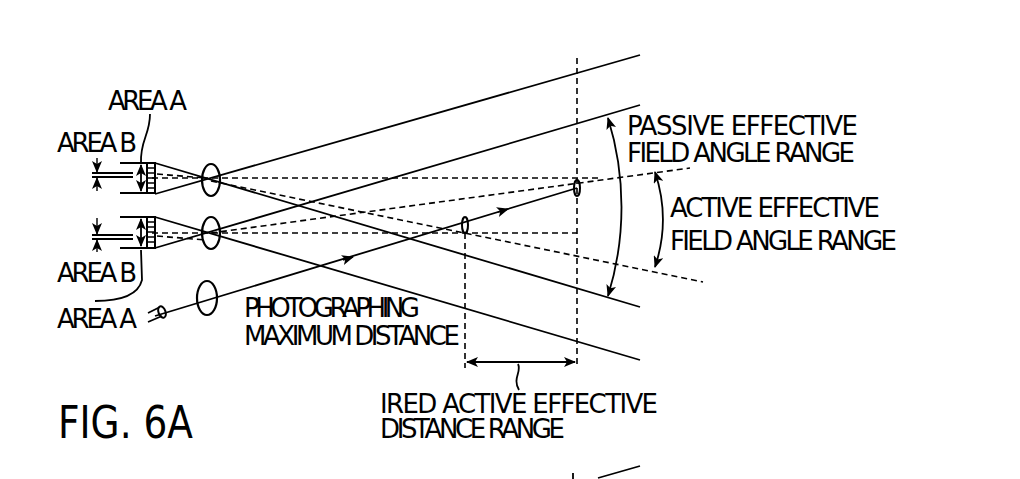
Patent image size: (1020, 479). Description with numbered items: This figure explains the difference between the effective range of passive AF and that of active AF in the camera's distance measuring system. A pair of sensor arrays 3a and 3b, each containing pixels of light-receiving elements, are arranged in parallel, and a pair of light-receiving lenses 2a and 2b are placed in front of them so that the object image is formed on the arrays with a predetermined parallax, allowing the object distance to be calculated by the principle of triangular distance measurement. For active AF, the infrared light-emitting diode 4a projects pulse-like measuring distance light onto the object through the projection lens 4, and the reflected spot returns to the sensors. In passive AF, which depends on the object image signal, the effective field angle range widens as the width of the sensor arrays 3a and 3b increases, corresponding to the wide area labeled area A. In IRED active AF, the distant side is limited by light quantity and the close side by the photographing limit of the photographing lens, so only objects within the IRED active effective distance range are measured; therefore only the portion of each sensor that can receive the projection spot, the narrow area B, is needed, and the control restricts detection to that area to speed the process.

The light-receiving lens 2a is at (213, 251).
The light-receiving lens 2b is at (213, 165).
The sensor array 3a is at (156, 250).
The sensor array 3b is at (156, 165).
The projection lens 4 is at (212, 315).
The infrared light-emitting diode (IRED) 4a is at (166, 320).